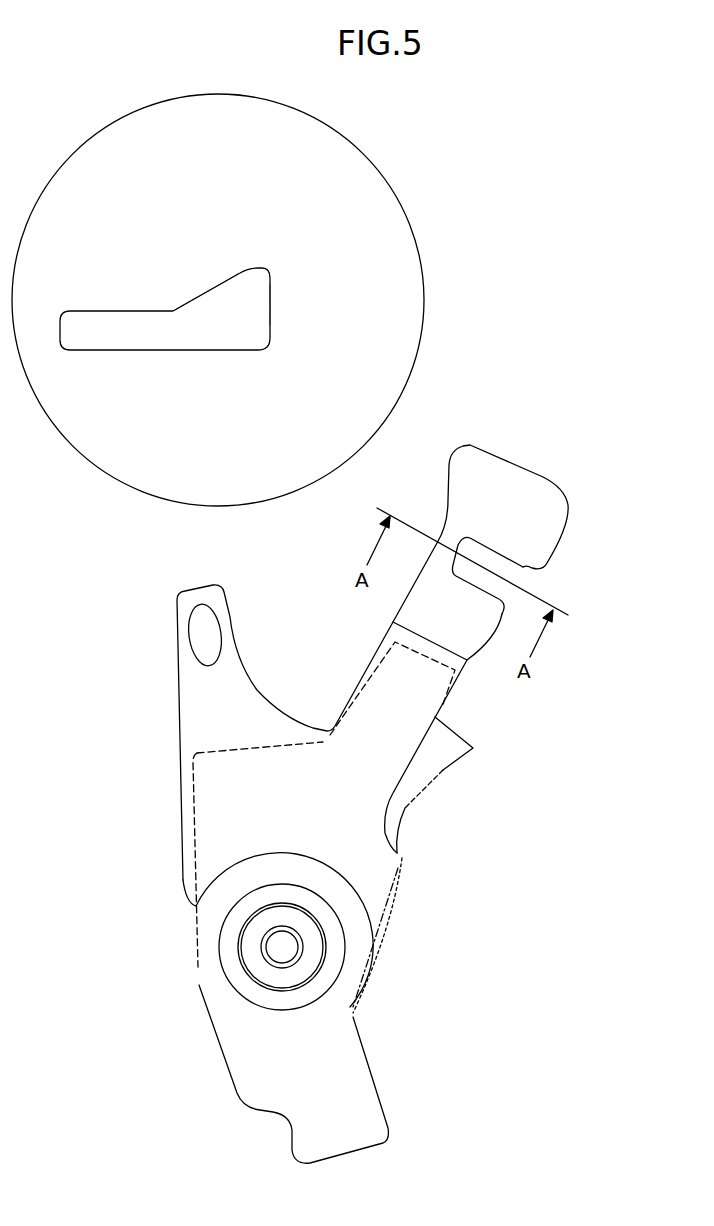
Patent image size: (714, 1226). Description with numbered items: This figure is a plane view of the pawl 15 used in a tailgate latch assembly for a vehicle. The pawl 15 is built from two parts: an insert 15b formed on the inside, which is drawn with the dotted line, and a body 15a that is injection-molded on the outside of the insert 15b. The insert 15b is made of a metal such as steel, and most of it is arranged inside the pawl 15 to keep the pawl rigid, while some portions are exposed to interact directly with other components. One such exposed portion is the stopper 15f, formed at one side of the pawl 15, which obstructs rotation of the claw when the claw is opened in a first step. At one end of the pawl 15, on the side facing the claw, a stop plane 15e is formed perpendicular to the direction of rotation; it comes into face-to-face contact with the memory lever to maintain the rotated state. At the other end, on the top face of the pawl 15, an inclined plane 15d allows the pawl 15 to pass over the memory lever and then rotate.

The pawl 15 is at (133, 334).
The body 15a is at (357, 687).
The insert 15b is at (377, 937).
The inclined plane 15d is at (210, 290).
The stop plane 15e is at (272, 293).
The stopper 15f is at (438, 760).